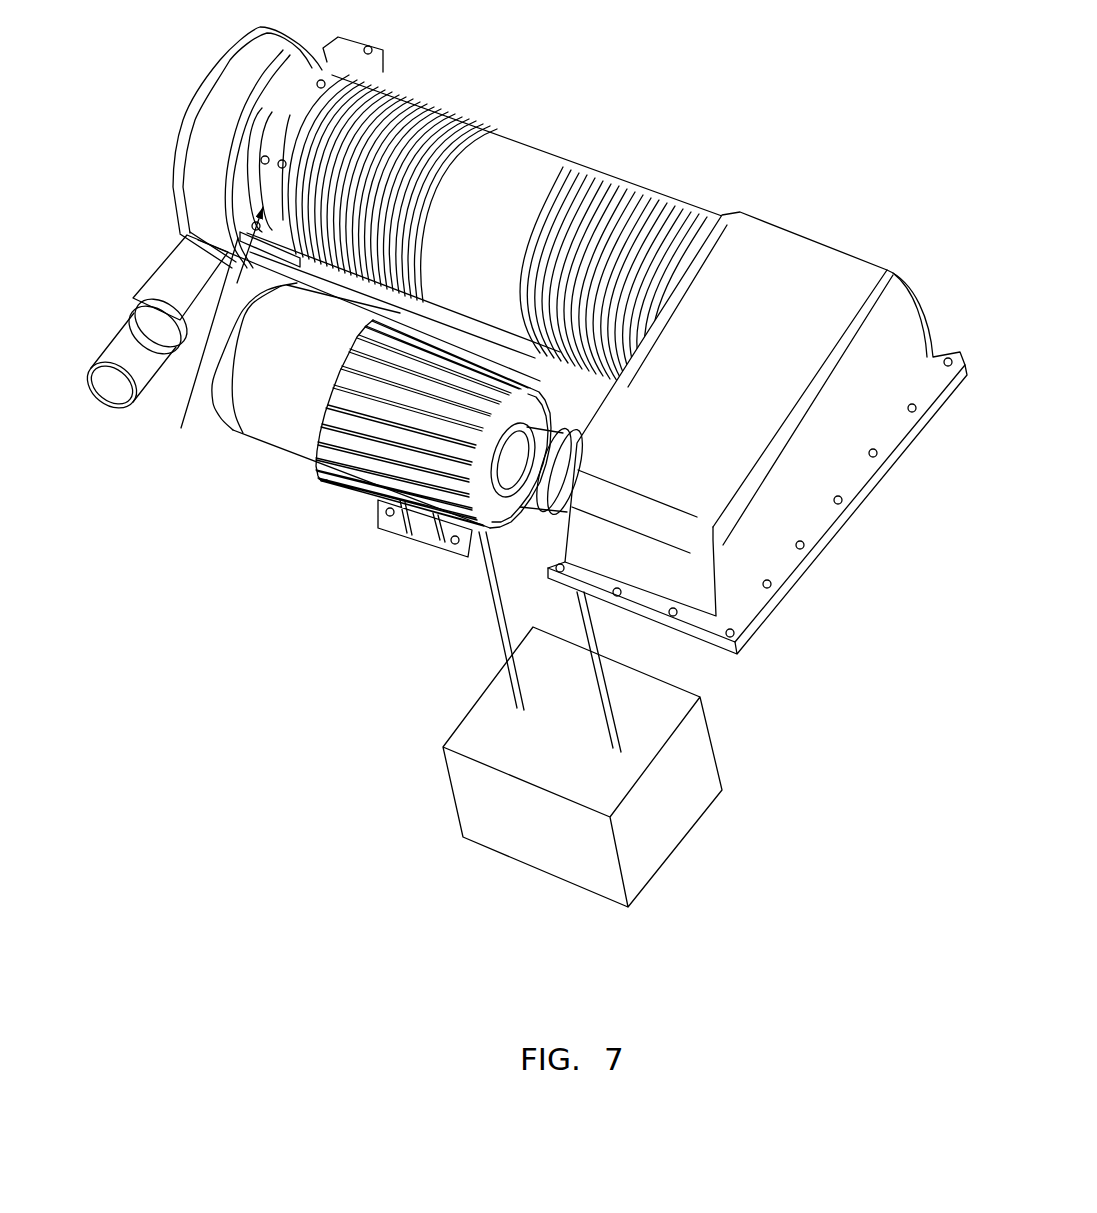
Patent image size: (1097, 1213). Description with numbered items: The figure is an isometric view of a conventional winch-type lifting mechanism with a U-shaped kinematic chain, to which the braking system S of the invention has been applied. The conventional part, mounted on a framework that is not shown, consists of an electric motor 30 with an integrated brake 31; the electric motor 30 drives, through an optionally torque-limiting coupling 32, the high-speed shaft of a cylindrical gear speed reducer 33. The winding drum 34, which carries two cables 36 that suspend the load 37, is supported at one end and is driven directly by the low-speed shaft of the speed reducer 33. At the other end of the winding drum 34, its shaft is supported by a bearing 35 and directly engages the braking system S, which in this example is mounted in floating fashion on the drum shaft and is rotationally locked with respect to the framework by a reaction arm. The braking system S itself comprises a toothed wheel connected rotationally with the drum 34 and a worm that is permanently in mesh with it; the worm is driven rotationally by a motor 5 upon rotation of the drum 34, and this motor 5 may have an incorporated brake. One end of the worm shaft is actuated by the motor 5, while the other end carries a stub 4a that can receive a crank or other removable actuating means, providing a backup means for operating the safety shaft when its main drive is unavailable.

The braking system S is at (218, 86).
The stub 4a is at (385, 53).
The winding drum 34 is at (533, 163).
The cylindrical gear speed reducer 33 is at (787, 290).
The motor 5 is at (110, 398).
The bearing 35 is at (181, 428).
The integrated brake 31 is at (243, 415).
The electric motor 30 is at (388, 430).
The coupling 32 is at (520, 485).
The cables 36 is at (580, 627).
The load 37 is at (487, 810).